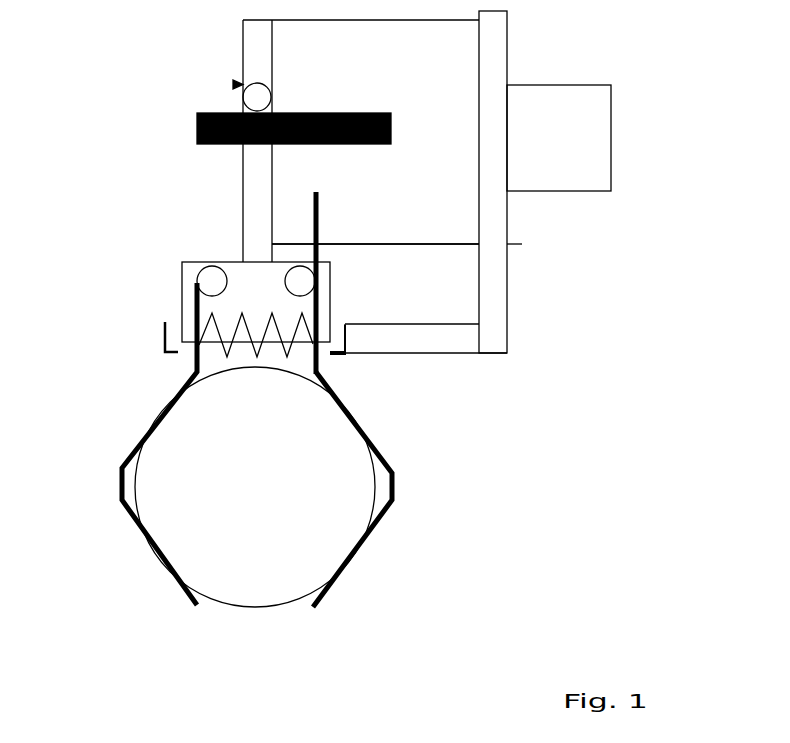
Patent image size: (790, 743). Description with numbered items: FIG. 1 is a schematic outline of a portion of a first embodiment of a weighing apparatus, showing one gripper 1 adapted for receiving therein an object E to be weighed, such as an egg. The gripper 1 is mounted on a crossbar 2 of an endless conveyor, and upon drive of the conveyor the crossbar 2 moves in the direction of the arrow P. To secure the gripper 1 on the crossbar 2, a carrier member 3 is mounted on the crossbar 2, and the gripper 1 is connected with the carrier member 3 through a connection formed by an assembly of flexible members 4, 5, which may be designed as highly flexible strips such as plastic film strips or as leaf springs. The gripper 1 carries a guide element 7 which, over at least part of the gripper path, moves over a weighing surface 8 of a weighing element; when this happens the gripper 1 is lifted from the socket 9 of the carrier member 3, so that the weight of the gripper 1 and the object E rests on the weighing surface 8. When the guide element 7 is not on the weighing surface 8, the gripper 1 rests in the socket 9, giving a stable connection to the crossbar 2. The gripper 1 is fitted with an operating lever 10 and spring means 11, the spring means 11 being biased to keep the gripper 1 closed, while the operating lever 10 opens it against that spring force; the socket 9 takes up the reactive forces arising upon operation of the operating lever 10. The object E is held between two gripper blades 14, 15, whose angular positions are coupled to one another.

The gripper 1 is at (90, 382).
The crossbar 2 is at (611, 145).
The carrier member 3 is at (493, 301).
The flexible member 4 is at (427, 21).
The flexible member 5 is at (398, 244).
The guide element 7 is at (258, 99).
The weighing surface 8 is at (352, 113).
The socket 9 is at (336, 327).
The operating lever 10 is at (318, 194).
The spring means 11 is at (247, 322).
The gripper blade 14 is at (393, 488).
The gripper blade 15 is at (120, 482).
The object E is at (280, 607).
The arrow P is at (657, 159).